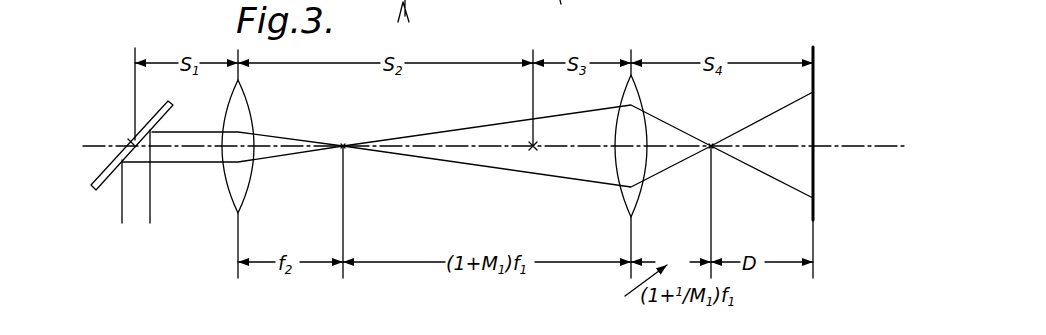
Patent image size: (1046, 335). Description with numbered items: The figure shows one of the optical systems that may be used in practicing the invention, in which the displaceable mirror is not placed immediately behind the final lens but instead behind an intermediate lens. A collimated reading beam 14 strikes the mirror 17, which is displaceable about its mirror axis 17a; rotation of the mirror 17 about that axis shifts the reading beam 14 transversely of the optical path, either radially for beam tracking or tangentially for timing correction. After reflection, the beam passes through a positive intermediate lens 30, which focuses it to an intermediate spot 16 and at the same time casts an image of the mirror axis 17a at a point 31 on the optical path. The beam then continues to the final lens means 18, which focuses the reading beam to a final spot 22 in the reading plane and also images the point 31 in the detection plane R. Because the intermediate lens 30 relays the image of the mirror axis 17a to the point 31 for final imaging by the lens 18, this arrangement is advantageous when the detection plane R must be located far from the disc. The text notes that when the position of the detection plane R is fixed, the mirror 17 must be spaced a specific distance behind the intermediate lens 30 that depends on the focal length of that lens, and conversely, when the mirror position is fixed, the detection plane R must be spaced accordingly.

The reading beam 14 is at (130, 192).
The mirror 17 is at (170, 106).
The mirror axis 17a is at (133, 143).
The positive intermediate lens 30 is at (253, 115).
The intermediate spot 16 is at (343, 142).
The point 31 is at (534, 150).
The final lens means 18 is at (640, 101).
The final spot 22 is at (712, 142).
The detection plane R is at (812, 90).